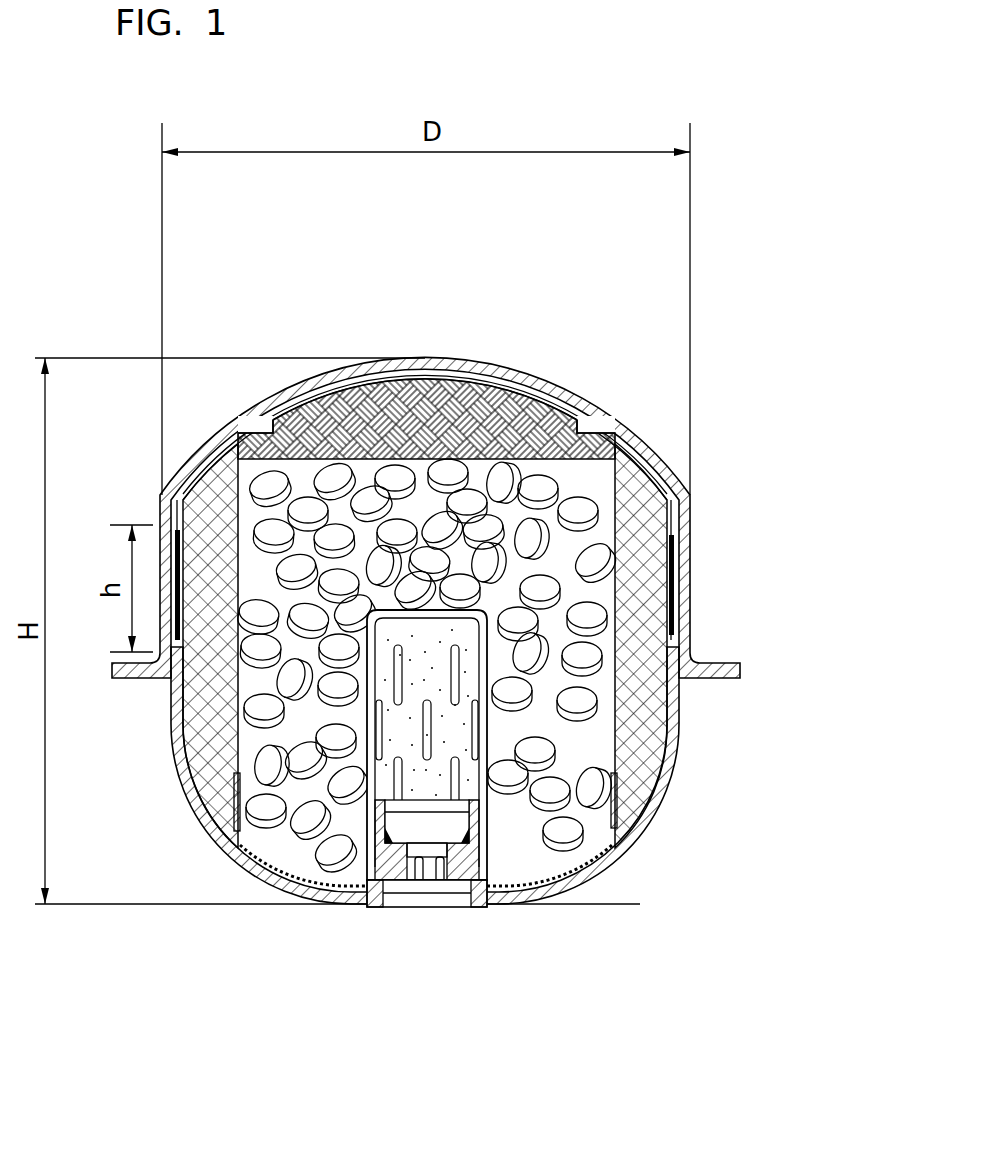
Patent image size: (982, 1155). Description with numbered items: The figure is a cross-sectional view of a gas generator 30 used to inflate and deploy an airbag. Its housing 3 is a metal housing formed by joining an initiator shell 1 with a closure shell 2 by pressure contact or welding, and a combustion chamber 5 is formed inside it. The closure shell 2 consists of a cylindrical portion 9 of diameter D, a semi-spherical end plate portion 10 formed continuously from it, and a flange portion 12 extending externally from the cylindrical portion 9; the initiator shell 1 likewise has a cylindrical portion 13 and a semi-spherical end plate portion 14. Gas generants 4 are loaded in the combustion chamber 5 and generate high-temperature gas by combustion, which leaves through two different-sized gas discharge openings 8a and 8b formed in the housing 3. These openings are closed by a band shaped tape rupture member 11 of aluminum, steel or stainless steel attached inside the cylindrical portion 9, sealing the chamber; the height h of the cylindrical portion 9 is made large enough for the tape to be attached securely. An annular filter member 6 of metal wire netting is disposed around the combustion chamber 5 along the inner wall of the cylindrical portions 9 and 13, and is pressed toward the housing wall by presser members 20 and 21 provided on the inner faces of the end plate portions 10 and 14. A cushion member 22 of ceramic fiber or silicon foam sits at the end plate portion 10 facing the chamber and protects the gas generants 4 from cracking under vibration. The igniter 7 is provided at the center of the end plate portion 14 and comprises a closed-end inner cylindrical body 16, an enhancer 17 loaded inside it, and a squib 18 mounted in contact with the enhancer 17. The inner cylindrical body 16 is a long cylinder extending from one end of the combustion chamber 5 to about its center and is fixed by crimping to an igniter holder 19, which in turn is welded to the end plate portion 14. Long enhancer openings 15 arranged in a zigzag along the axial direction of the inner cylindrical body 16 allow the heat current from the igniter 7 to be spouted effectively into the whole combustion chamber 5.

The initiator shell 1 is at (468, 775).
The closure shell 2 is at (481, 522).
The housing 3 is at (481, 522).
The gas generants 4 is at (580, 704).
The combustion chamber 5 is at (471, 646).
The filter member 6 is at (653, 522).
The igniter 7 is at (496, 818).
The gas discharge opening 8a is at (481, 527).
The gas discharge opening 8b is at (481, 527).
The cylindrical portion 9 is at (458, 527).
The end plate portion 10 is at (567, 398).
The rupture member 11 is at (176, 558).
The flange portion 12 is at (738, 665).
The cylindrical portion 13 is at (468, 775).
The end plate portion 14 is at (637, 838).
The enhancer openings 15 is at (480, 722).
The inner cylindrical body 16 is at (388, 887).
The enhancer 17 is at (378, 745).
The squib 18 is at (438, 830).
The igniter holder 19 is at (375, 890).
The presser member 20 is at (425, 397).
The presser member 21 is at (613, 832).
The cushion member 22 is at (266, 428).
The gas generator 30 is at (561, 288).